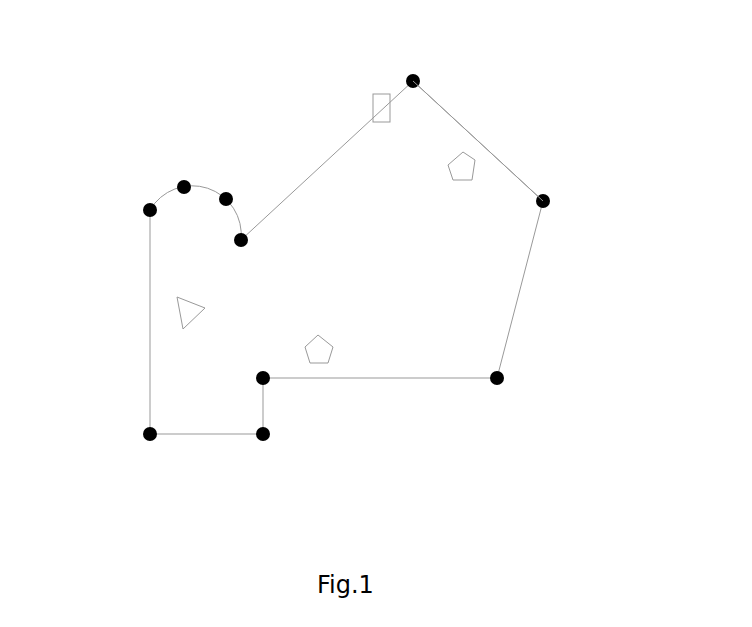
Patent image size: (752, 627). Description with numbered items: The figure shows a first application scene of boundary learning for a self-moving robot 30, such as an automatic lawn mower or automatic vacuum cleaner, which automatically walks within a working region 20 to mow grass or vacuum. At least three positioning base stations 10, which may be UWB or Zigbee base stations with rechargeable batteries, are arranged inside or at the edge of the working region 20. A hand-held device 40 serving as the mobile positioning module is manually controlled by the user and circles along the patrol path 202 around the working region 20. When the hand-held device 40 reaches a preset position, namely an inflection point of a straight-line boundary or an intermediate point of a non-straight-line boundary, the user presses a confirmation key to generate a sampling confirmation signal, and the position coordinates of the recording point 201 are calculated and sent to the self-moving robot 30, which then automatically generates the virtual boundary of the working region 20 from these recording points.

The positioning base station 10 is at (465, 165).
The working region 20 is at (475, 325).
The recording point 201 is at (183, 183).
The patrol path 202 is at (450, 108).
The self-moving robot 30 is at (184, 313).
The hand-held device 40 is at (380, 98).